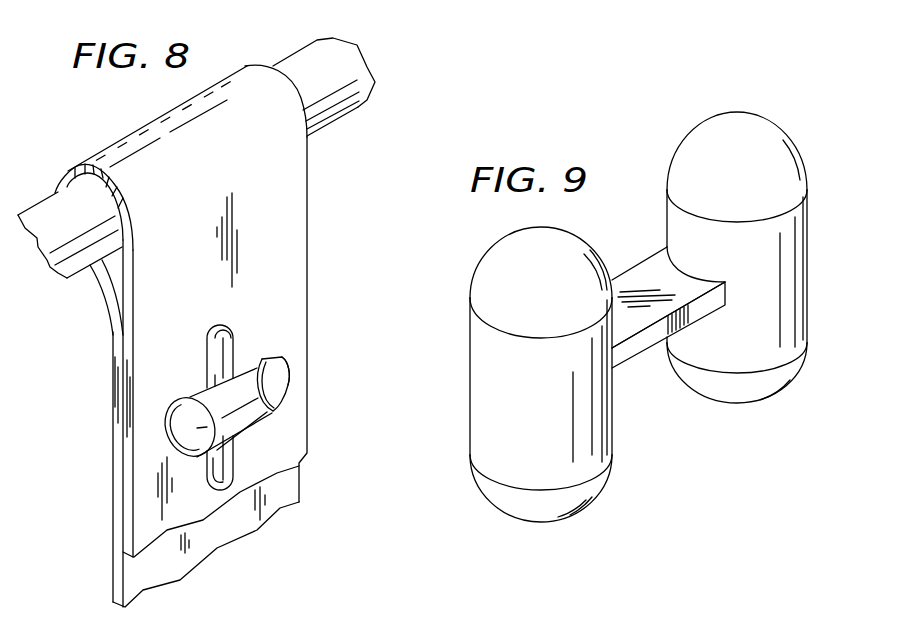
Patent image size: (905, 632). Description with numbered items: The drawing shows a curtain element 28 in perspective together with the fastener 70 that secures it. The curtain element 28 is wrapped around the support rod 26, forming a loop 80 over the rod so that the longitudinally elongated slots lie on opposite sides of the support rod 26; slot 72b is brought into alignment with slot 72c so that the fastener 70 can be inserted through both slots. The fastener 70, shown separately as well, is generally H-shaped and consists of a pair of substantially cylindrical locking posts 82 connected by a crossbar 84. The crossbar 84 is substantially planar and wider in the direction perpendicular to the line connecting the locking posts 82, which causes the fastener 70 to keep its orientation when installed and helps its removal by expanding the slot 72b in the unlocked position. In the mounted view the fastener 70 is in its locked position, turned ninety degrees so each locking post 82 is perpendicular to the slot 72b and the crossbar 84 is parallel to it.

In FIG. 8, the support rod 26 is at (353, 72).
In FIG. 8, the curtain element 28 is at (113, 432).
In FIG. 8, the fastener 70 is at (292, 365).
In FIG. 9, the fastener 70 is at (643, 145).
In FIG. 8, the slot 72b is at (230, 350).
In FIG. 8, the slot 72c is at (215, 343).
In FIG. 8, the loop 80 is at (223, 72).
In FIG. 9, the locking post 82 is at (792, 232).
In FIG. 8, the crossbar 84 is at (215, 375).
In FIG. 9, the crossbar 84 is at (635, 347).